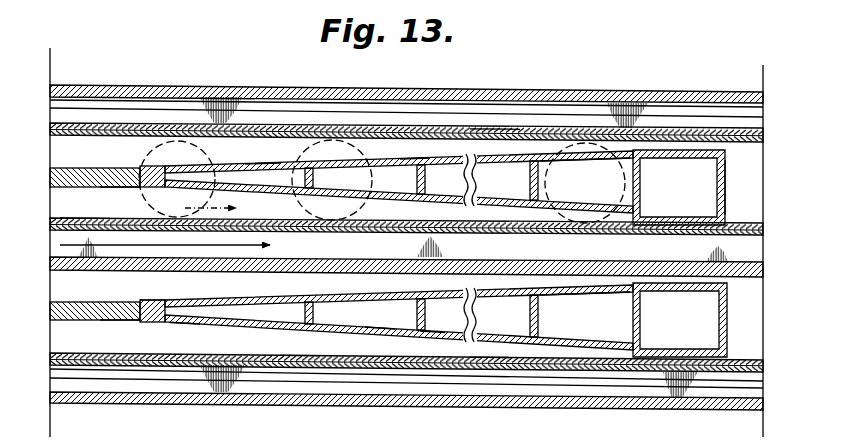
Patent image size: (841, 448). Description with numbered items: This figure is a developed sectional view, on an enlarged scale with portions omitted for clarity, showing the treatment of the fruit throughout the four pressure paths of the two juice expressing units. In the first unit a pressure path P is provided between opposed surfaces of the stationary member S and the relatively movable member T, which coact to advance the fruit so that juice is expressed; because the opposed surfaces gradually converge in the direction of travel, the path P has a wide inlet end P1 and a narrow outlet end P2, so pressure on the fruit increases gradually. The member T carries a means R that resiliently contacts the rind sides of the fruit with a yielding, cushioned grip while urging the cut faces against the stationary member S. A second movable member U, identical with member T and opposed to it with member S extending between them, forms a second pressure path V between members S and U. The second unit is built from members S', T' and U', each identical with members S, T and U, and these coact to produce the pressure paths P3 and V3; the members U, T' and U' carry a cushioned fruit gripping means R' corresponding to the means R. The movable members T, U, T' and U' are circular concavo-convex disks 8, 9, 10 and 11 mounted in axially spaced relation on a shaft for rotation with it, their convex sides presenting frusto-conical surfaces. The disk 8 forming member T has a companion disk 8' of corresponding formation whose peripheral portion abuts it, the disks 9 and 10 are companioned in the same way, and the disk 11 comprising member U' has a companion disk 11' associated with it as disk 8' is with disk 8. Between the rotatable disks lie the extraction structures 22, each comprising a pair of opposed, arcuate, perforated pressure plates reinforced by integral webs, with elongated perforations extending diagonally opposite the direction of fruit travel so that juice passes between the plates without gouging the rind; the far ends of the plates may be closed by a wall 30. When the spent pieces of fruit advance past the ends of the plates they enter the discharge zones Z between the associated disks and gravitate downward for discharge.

The companion disk 11' is at (406, 83).
The disk 11 is at (406, 153).
The disk 10 is at (742, 224).
The disk 9 is at (748, 290).
The disk 8 is at (416, 360).
The companion disk 8' is at (406, 418).
The movable member U' is at (371, 141).
The second movable member U is at (403, 362).
The wall 30 is at (729, 317).
The extraction structure 22 is at (430, 342).
The discharge zones Z is at (744, 196).
The pressure path P3 is at (118, 200).
The pressure path V3 is at (260, 152).
The wide inlet end P1 is at (62, 337).
The pressure path P is at (184, 341).
The second pressure path V is at (144, 288).
The narrow outlet end P2 is at (683, 400).
The movable member T' is at (64, 208).
The movable member T is at (298, 397).
The cushioned fruit gripping means R' is at (495, 97).
The means for resilient contact R is at (490, 396).
The stationary member S' is at (427, 108).
The stationary member S is at (376, 387).